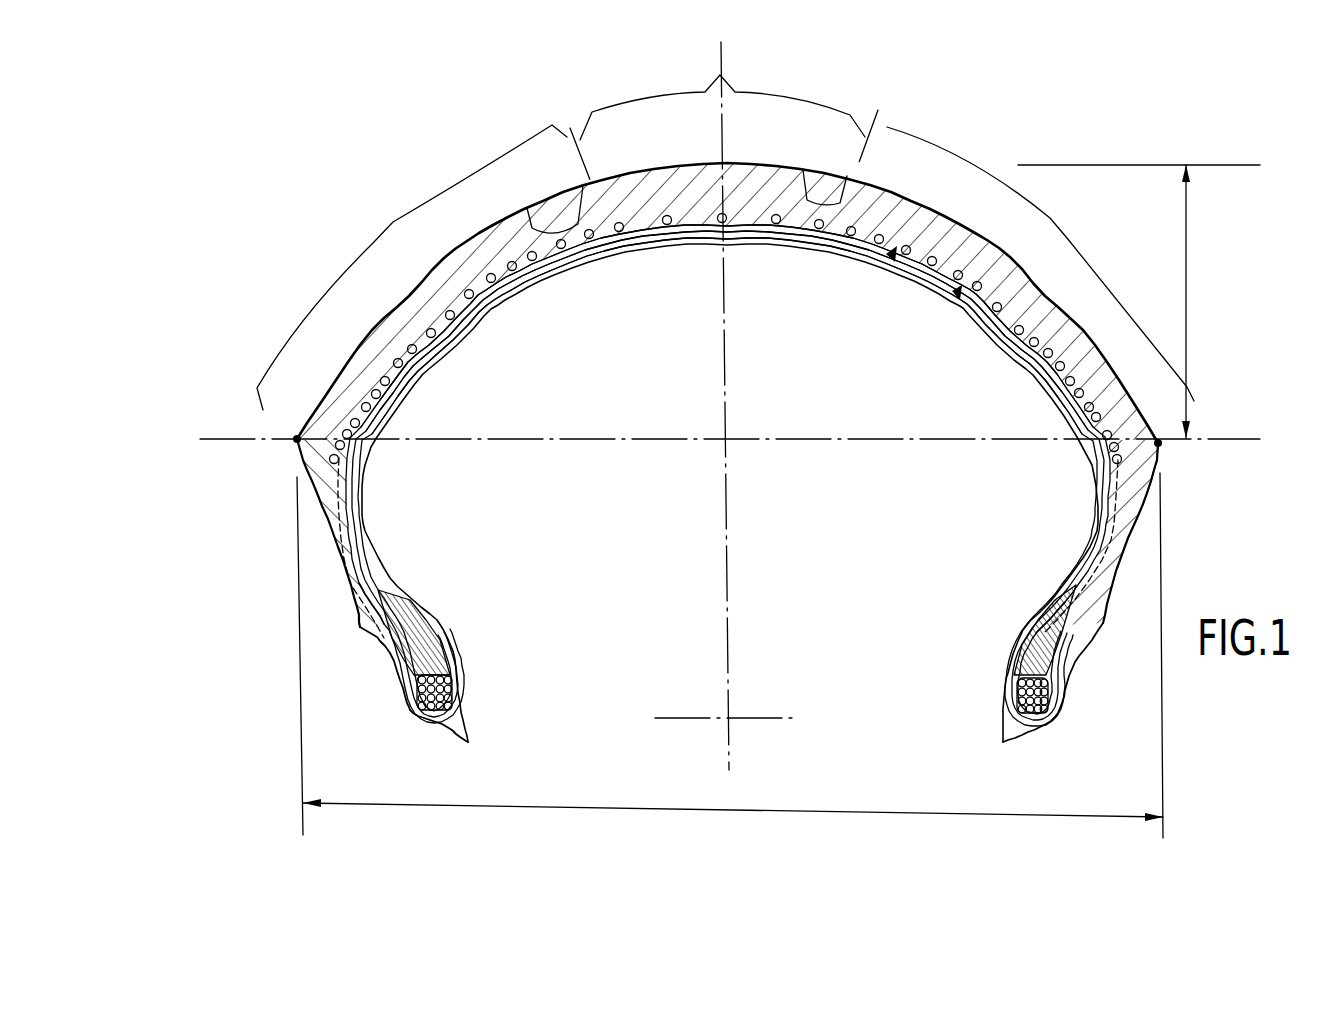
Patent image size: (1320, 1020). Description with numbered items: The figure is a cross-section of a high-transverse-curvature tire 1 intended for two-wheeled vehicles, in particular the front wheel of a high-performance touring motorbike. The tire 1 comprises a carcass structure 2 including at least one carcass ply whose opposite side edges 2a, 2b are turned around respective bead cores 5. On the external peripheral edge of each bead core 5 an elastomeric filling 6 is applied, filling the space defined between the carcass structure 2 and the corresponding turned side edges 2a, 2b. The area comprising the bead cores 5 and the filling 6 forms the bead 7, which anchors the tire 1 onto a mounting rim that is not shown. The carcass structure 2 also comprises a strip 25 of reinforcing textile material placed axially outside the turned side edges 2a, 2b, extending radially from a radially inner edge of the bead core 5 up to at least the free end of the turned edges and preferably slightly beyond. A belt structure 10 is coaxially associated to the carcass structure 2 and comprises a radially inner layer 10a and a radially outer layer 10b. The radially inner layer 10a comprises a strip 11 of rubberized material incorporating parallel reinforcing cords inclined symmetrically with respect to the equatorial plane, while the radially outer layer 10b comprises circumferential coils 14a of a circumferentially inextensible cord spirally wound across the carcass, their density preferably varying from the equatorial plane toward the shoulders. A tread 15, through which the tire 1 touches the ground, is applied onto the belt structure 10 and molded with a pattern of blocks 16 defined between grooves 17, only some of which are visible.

The high-transverse-curvature tire 1 is at (353, 137).
The carcass structure 2 is at (410, 373).
The turned side edge of carcass ply 2a is at (387, 643).
The turned side edge of carcass ply 2b is at (1067, 647).
The bead core 5 is at (450, 690).
The elastomeric filling 6 is at (423, 623).
The bead 7 is at (460, 637).
The belt structure 10 is at (330, 472).
The radially inner layer of belt structure 10a is at (507, 283).
The radially outer layer of belt structure 10b is at (893, 250).
The strip of rubberized material 11 is at (1113, 473).
The circumferential coils 14a is at (657, 233).
The tread 15 is at (440, 284).
The blocks 16 is at (968, 224).
The grooves 17 is at (550, 228).
The strip of reinforcing textile material 25 is at (357, 574).